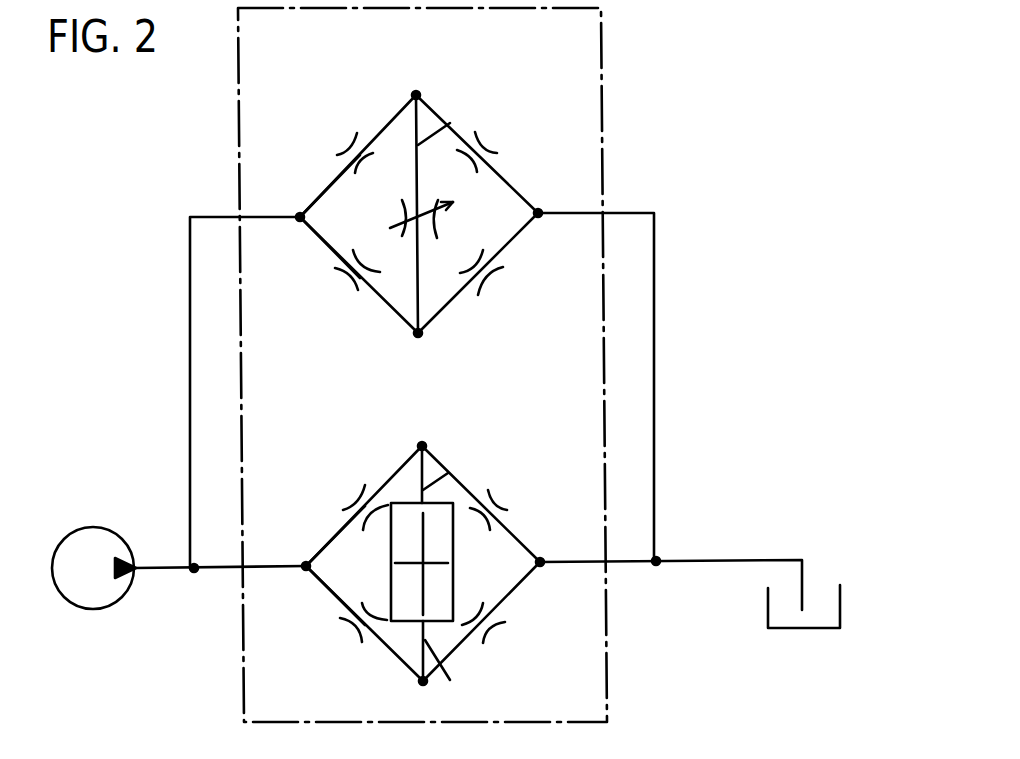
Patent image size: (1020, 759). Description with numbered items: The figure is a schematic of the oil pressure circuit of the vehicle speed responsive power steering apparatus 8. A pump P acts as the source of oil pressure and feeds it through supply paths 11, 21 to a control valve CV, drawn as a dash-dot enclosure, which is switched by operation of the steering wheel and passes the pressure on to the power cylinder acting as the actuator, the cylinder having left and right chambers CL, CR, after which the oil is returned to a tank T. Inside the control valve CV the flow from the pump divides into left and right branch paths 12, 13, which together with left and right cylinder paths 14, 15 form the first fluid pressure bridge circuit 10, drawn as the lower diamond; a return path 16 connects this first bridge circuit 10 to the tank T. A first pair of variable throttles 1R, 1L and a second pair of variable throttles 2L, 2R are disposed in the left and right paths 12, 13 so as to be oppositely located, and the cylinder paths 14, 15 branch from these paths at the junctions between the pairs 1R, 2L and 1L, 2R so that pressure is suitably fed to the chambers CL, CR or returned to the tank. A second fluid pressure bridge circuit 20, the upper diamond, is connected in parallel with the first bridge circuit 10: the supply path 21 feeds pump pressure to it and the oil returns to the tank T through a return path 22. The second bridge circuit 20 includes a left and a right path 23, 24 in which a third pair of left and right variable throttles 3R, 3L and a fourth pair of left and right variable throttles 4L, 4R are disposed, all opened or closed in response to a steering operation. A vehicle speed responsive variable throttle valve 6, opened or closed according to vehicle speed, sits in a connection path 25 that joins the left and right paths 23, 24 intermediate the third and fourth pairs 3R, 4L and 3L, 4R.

The vehicle speed responsive power steering apparatus 8 is at (781, 63).
The pump P is at (94, 589).
The tank T is at (817, 606).
The control valve CV is at (608, 692).
The first fluid pressure bridge circuit 10 is at (477, 662).
The supply path 11 is at (168, 569).
The left branch path 12 is at (330, 593).
The right branch path 13 is at (320, 548).
The left cylinder path 14 is at (452, 679).
The right cylinder path 15 is at (448, 473).
The return path 16 is at (627, 562).
The second fluid pressure bridge circuit 20 is at (375, 108).
The supply path 21 is at (228, 219).
The return path 22 is at (655, 308).
The left path 23 is at (322, 250).
The right path 24 is at (323, 183).
The connection path 25 is at (450, 123).
The vehicle speed responsive variable throttle valve 6 is at (413, 209).
The variable throttle 1L is at (351, 498).
The variable throttle 1R is at (354, 635).
The variable throttle 2L is at (499, 633).
The variable throttle 2R is at (508, 503).
The variable throttle 3L is at (340, 145).
The variable throttle 3R is at (346, 287).
The variable throttle 4L is at (501, 280).
The variable throttle 4R is at (495, 144).
The right chamber CR is at (407, 543).
The left chamber CL is at (406, 595).